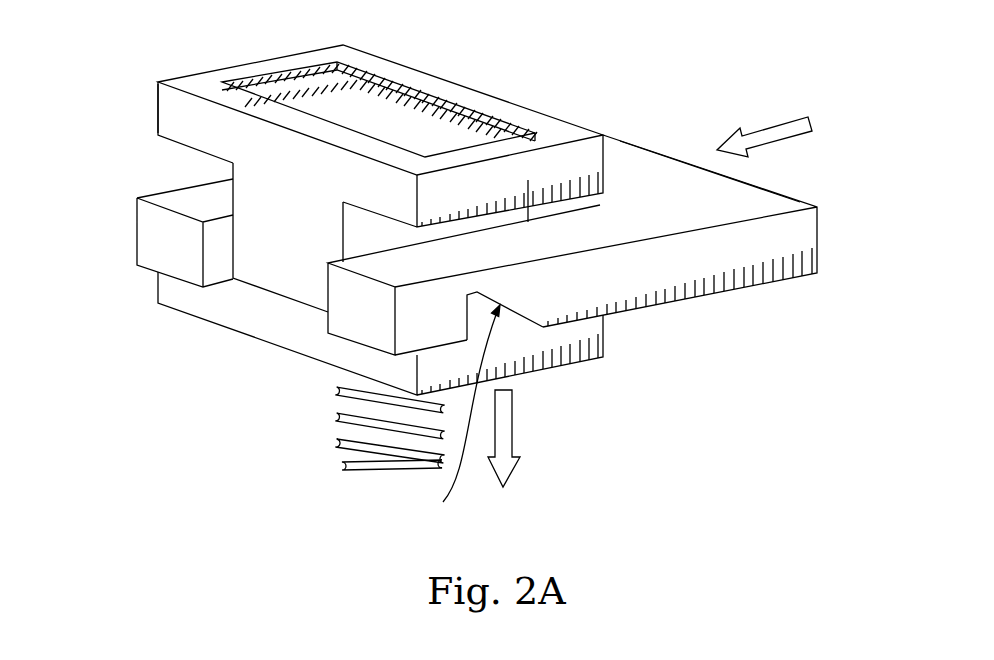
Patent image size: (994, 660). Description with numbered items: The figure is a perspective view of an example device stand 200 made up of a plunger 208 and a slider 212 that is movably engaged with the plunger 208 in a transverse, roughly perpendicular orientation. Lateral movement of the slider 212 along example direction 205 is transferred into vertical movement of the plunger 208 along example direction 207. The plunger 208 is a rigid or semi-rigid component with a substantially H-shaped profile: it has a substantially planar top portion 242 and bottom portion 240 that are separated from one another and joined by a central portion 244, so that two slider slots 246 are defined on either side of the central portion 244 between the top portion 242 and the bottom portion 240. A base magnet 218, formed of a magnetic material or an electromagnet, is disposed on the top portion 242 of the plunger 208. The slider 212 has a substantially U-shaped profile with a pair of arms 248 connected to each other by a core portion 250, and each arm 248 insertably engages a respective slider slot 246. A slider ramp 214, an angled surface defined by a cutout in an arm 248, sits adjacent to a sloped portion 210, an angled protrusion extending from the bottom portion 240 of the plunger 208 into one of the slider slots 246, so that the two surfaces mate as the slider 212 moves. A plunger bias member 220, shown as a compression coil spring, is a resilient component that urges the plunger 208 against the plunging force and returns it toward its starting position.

The device stand 200 is at (658, 77).
The example direction 205 is at (812, 125).
The example direction 207 is at (505, 435).
The plunger 208 is at (128, 103).
The sloped portion 210 is at (447, 410).
The slider 212 is at (827, 225).
The slider ramp 214 is at (518, 311).
The base magnet 218 is at (473, 130).
The plunger bias member 220 is at (335, 418).
The bottom portion 240 is at (227, 311).
The top portion 242 is at (180, 128).
The central portion 244 is at (282, 213).
The slider slots 246 is at (370, 230).
The arms 248 is at (400, 268).
The core portion 250 is at (640, 168).